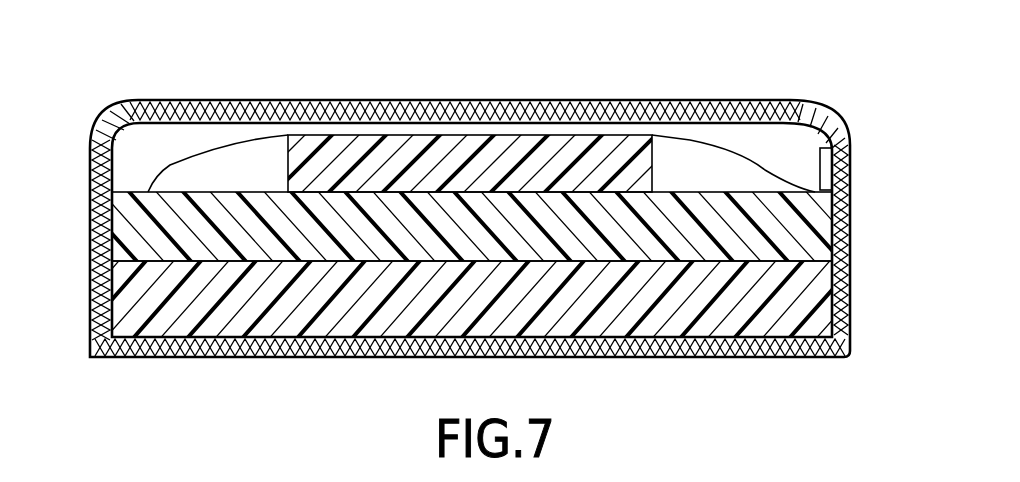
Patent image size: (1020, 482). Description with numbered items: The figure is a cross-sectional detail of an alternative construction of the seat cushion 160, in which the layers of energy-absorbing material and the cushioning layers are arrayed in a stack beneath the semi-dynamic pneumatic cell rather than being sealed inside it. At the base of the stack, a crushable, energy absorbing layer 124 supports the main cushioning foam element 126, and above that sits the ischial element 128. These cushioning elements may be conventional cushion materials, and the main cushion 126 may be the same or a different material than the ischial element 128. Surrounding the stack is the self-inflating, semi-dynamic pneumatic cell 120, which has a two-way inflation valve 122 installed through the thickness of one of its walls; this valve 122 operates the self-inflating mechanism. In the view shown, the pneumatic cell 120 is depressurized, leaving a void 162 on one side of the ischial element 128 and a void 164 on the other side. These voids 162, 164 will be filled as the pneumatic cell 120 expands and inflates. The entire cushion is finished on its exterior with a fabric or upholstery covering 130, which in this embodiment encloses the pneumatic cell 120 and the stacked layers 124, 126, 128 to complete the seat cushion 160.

The seat cushion 160 is at (158, 43).
The self-inflating, semi-dynamic pneumatic cell 120 is at (782, 136).
The two-way inflation valve 122 is at (851, 160).
The crushable, energy absorbing layer 124 is at (120, 308).
The main cushioning foam element 126 is at (120, 225).
The ischial element 128 is at (477, 155).
The fabric or upholstery covering 130 is at (200, 342).
The void 162 is at (264, 157).
The void 164 is at (696, 162).